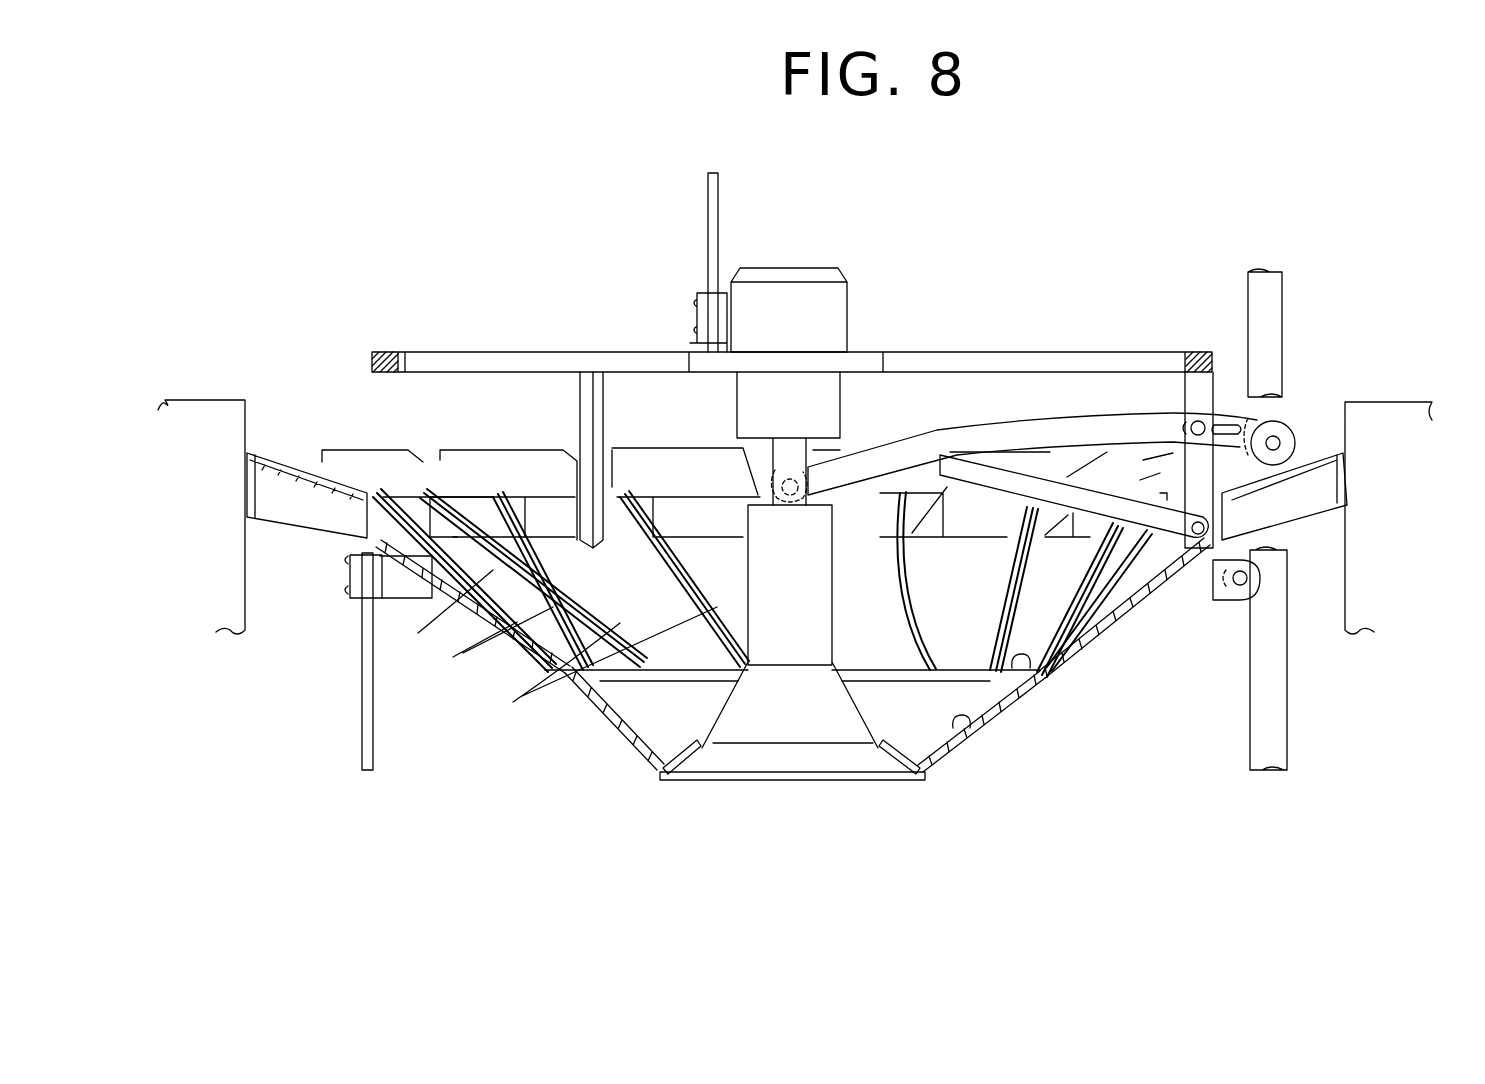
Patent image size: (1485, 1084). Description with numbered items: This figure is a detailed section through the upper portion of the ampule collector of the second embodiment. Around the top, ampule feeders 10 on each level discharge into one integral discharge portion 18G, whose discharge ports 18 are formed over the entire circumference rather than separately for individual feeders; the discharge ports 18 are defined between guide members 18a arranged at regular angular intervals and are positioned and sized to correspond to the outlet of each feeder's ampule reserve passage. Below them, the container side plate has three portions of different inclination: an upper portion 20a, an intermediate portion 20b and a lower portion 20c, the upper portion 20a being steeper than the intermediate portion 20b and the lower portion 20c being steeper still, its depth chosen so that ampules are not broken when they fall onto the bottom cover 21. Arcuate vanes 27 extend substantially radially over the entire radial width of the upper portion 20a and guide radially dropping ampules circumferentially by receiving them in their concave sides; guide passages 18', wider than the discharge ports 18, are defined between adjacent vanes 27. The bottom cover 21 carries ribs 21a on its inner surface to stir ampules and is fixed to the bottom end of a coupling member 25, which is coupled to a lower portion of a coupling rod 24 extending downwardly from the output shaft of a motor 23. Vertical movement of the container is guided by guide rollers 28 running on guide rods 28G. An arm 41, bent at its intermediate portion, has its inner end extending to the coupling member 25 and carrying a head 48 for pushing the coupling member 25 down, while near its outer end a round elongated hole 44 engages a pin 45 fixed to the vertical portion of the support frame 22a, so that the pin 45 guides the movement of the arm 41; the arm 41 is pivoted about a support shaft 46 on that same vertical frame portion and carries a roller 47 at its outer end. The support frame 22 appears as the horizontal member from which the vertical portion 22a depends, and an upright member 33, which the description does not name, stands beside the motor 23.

The feeders 10 is at (200, 392).
The integral discharge portion 18G is at (357, 443).
The guide members 18a is at (419, 463).
The discharge ports 18 is at (762, 488).
The guide passages 18' is at (551, 656).
The arcuate vanes 27 is at (402, 661).
The top plate 22 is at (950, 352).
The support frame 22a is at (1187, 383).
The upright post 33 is at (718, 186).
The motor 23 is at (803, 285).
The coupling rod 24 is at (793, 443).
The head 48 is at (763, 453).
The coupling member 25 is at (745, 527).
The bottom cover 21 is at (747, 732).
The ribs 21a is at (655, 740).
The upper portion 20a is at (1108, 615).
The intermediate portion 20b is at (1025, 673).
The lower portion 20c is at (957, 743).
The arm 41 is at (1012, 432).
The pin 45 is at (1198, 420).
The round elongated hole 44 is at (1226, 430).
The roller 47 is at (1272, 438).
The support shaft 46 is at (1170, 557).
The guide rollers 28 is at (1238, 600).
The guide rods 28G is at (1290, 727).